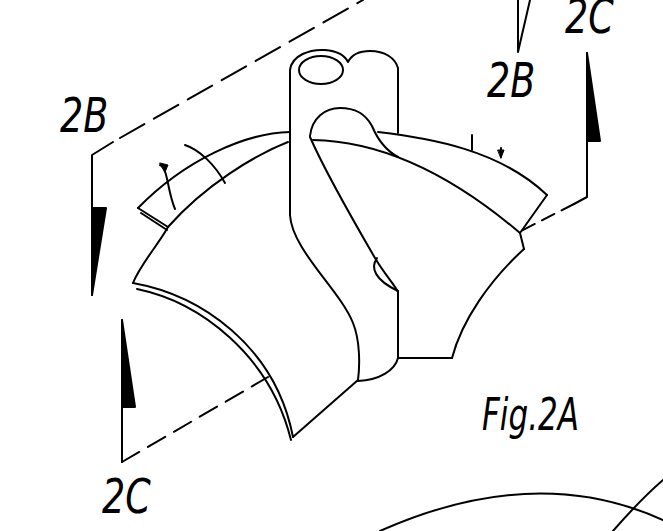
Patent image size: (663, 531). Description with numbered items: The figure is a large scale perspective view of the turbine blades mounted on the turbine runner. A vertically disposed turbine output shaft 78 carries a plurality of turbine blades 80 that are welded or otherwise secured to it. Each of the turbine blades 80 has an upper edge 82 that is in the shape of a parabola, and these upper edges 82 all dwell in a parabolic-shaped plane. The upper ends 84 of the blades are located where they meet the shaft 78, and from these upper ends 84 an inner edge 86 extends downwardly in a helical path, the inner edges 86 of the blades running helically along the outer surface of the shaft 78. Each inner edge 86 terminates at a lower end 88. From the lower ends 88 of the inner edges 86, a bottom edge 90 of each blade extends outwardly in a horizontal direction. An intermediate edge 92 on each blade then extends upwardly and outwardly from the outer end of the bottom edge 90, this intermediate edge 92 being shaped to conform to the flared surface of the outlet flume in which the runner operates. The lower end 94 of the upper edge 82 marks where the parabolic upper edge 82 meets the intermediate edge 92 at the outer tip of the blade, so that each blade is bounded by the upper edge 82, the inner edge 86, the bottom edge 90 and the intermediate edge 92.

The turbine output shaft 78 is at (380, 67).
The turbine blades 80 is at (160, 165).
The upper edges 82 is at (185, 145).
The upper ends of the blades 84 is at (368, 113).
The inner edge 86 is at (398, 292).
The lower end of the inner edge 88 is at (357, 378).
The bottom edge 90 is at (320, 420).
The intermediate edge 92 is at (240, 340).
The lower end of the upper edge 94 is at (133, 284).